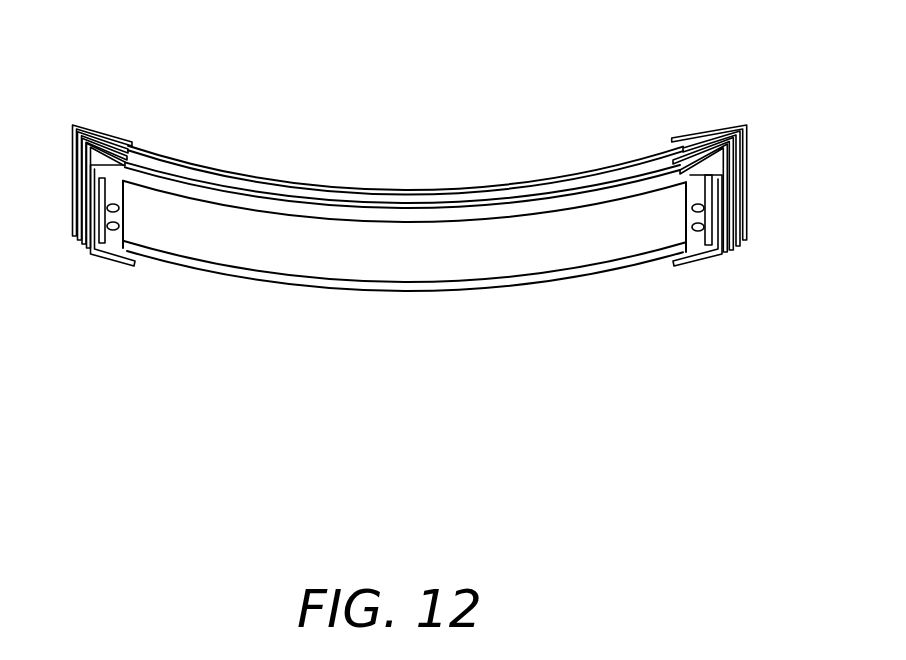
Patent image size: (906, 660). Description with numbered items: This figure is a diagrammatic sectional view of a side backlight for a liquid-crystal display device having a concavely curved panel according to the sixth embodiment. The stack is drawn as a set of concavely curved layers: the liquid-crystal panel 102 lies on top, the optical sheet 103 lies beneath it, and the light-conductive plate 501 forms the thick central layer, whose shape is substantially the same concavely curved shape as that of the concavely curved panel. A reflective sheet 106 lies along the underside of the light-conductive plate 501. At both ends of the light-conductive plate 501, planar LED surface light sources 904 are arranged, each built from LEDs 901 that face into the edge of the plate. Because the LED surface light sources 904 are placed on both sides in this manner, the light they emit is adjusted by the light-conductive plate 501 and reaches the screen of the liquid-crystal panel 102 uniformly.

The liquid-crystal panel 102 is at (257, 189).
The optical sheet 103 is at (380, 212).
The reflective sheet 106 is at (493, 290).
The light-conductive plate 501 is at (440, 269).
The LEDs 901 is at (127, 217).
The planar LED surface light sources 904 is at (130, 189).